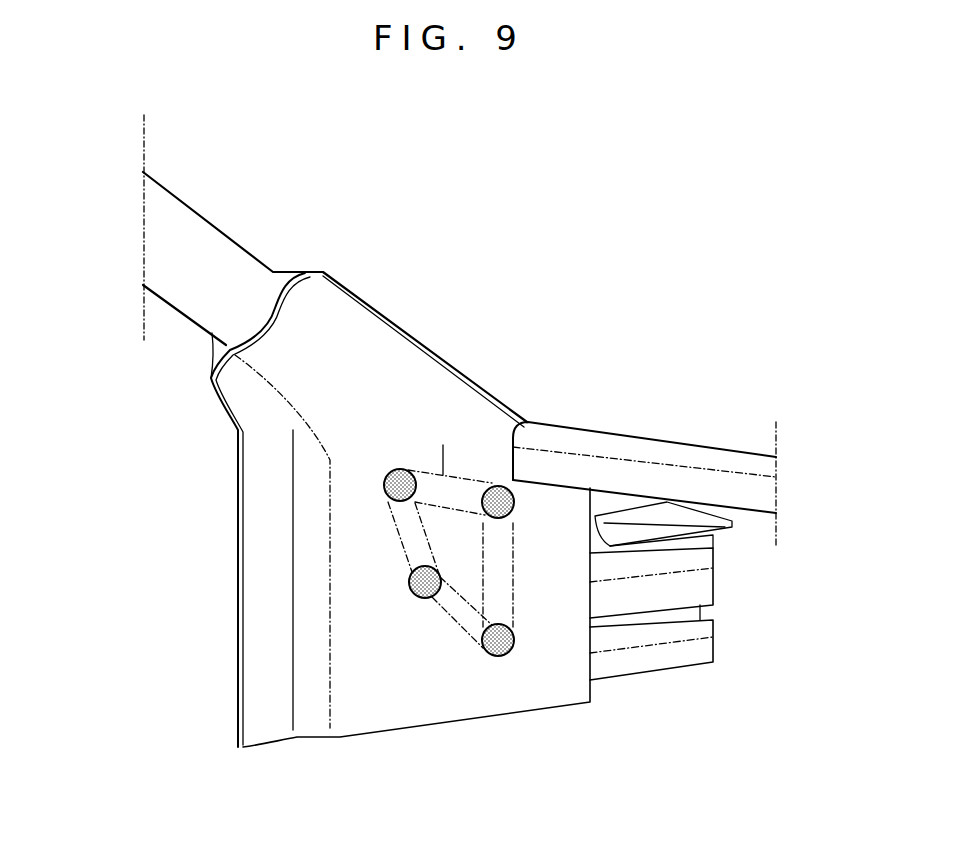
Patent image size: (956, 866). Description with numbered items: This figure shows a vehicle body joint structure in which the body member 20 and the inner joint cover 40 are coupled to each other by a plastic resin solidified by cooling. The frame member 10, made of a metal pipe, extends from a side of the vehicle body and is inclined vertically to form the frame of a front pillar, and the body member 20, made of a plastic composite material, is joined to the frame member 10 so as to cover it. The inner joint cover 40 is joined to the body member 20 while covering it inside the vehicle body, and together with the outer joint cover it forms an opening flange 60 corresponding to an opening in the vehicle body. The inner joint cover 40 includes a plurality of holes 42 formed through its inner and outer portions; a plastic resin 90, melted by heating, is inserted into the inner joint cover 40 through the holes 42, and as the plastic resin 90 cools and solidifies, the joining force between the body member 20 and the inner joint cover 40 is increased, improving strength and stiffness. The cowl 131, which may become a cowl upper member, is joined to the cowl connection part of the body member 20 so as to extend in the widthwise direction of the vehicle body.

The frame member 10 is at (210, 247).
The inner joint cover 40 is at (372, 453).
The opening flange 60 is at (276, 568).
The cowl 131 is at (642, 447).
The body member 20 is at (698, 585).
The holes 42 is at (400, 468).
The plastic resin 90 is at (493, 486).